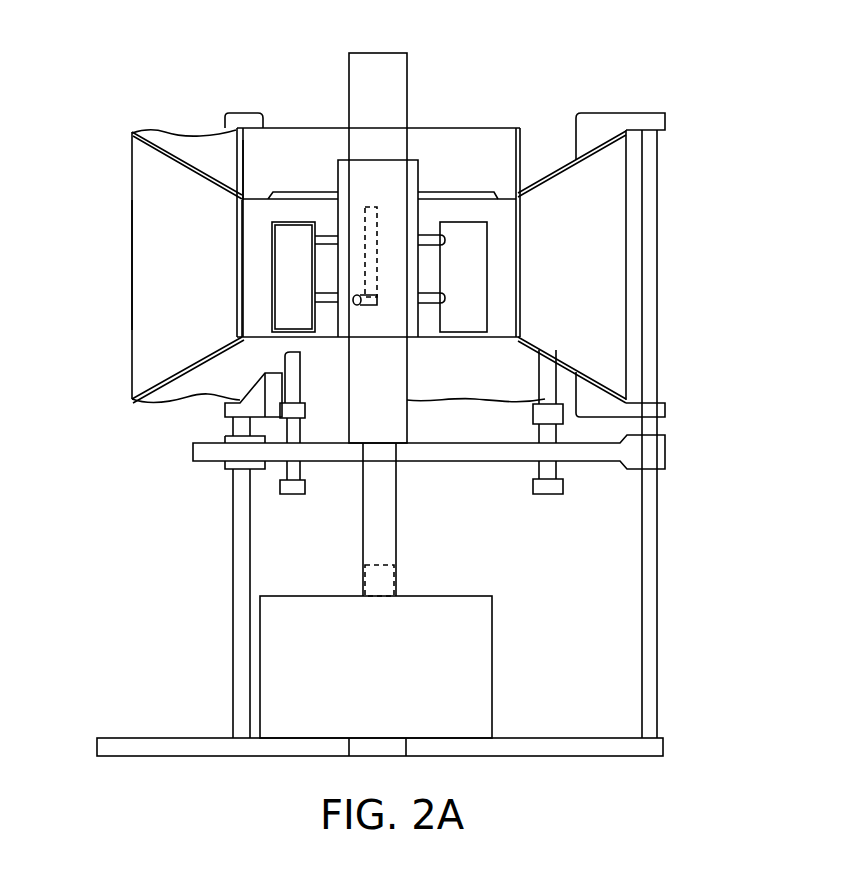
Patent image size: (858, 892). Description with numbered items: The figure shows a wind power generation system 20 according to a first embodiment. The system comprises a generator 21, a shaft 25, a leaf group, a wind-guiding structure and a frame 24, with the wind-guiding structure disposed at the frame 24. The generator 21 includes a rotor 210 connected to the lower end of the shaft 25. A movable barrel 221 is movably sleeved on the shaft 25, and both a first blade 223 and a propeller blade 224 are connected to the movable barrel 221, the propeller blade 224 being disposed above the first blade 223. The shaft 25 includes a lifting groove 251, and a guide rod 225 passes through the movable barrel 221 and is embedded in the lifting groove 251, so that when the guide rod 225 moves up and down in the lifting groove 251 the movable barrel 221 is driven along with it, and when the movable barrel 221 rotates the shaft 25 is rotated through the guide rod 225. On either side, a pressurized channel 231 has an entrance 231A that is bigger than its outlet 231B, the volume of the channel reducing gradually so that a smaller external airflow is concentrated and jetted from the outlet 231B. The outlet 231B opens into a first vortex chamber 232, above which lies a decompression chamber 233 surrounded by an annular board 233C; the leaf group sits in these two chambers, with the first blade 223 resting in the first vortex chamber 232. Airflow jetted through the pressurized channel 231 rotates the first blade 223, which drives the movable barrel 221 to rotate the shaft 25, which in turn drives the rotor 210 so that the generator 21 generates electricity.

The wind power generation system 20 is at (842, 720).
The generator 21 is at (478, 697).
The rotor 210 is at (397, 578).
The frame 24 is at (650, 529).
The shaft 25 is at (398, 91).
The lifting groove 251 is at (378, 207).
The movable barrel 221 is at (338, 173).
The first blade 223 is at (272, 317).
The propeller blade 224 is at (441, 193).
The guide rod 225 is at (357, 306).
The pressurized channel 231 is at (185, 266).
The entrance 231A is at (121, 217).
The outlet 231B is at (231, 217).
The first vortex chamber 232 is at (505, 215).
The decompression chamber 233 is at (297, 147).
The annular board 233C is at (233, 157).